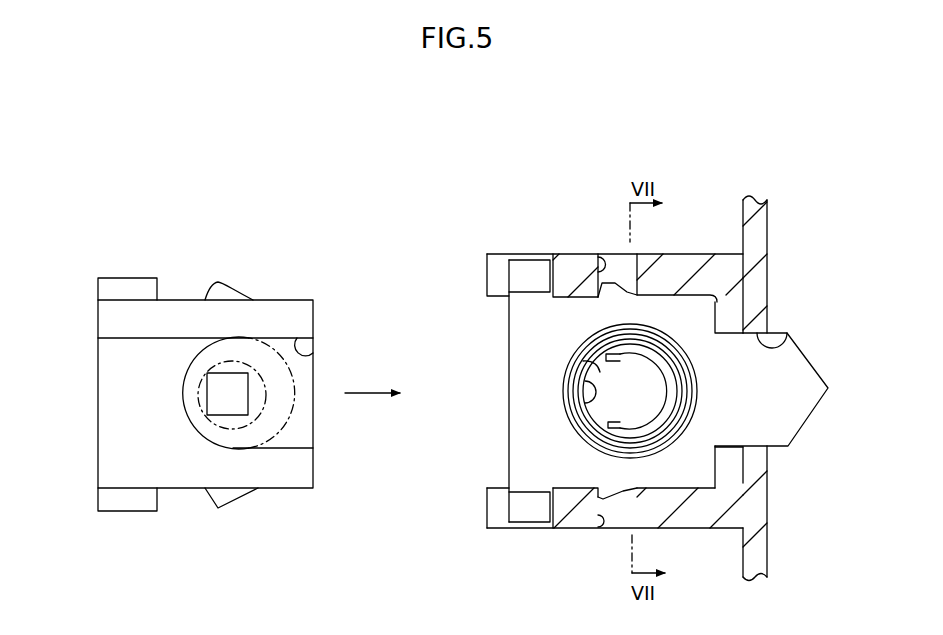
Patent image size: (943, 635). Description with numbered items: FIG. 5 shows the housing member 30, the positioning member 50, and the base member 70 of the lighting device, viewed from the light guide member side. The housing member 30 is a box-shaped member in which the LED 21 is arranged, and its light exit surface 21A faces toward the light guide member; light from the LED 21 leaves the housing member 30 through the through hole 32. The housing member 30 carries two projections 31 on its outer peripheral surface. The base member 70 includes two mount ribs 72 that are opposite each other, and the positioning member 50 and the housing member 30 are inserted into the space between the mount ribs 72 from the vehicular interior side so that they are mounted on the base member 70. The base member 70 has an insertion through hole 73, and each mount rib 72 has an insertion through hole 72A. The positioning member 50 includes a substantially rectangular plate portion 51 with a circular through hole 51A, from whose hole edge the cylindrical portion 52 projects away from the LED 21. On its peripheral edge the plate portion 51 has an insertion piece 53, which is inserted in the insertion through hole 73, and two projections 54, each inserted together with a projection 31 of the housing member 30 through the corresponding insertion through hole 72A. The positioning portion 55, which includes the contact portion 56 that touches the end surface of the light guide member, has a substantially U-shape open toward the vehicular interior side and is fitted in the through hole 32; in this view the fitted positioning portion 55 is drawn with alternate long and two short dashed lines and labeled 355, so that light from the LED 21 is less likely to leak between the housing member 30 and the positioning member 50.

The housing member 30 is at (178, 282).
The projection 31 is at (218, 286).
The through hole 32 is at (313, 355).
The positioning portion fitted in the through hole 355 is at (233, 352).
The LED 21 is at (200, 396).
The light exit surface 21A is at (242, 397).
The positioning member 50 is at (494, 459).
The plate portion 51 is at (523, 313).
The through hole 51A is at (593, 390).
The cylindrical portion 52 is at (687, 394).
The insertion piece 53 is at (793, 418).
The projection 54 is at (612, 292).
The positioning portion 55 is at (590, 368).
The contact portion 56 is at (638, 420).
The base member 70 is at (758, 232).
The mount rib 72 is at (687, 268).
The insertion through hole 72A is at (600, 265).
The insertion through hole 73 is at (790, 343).